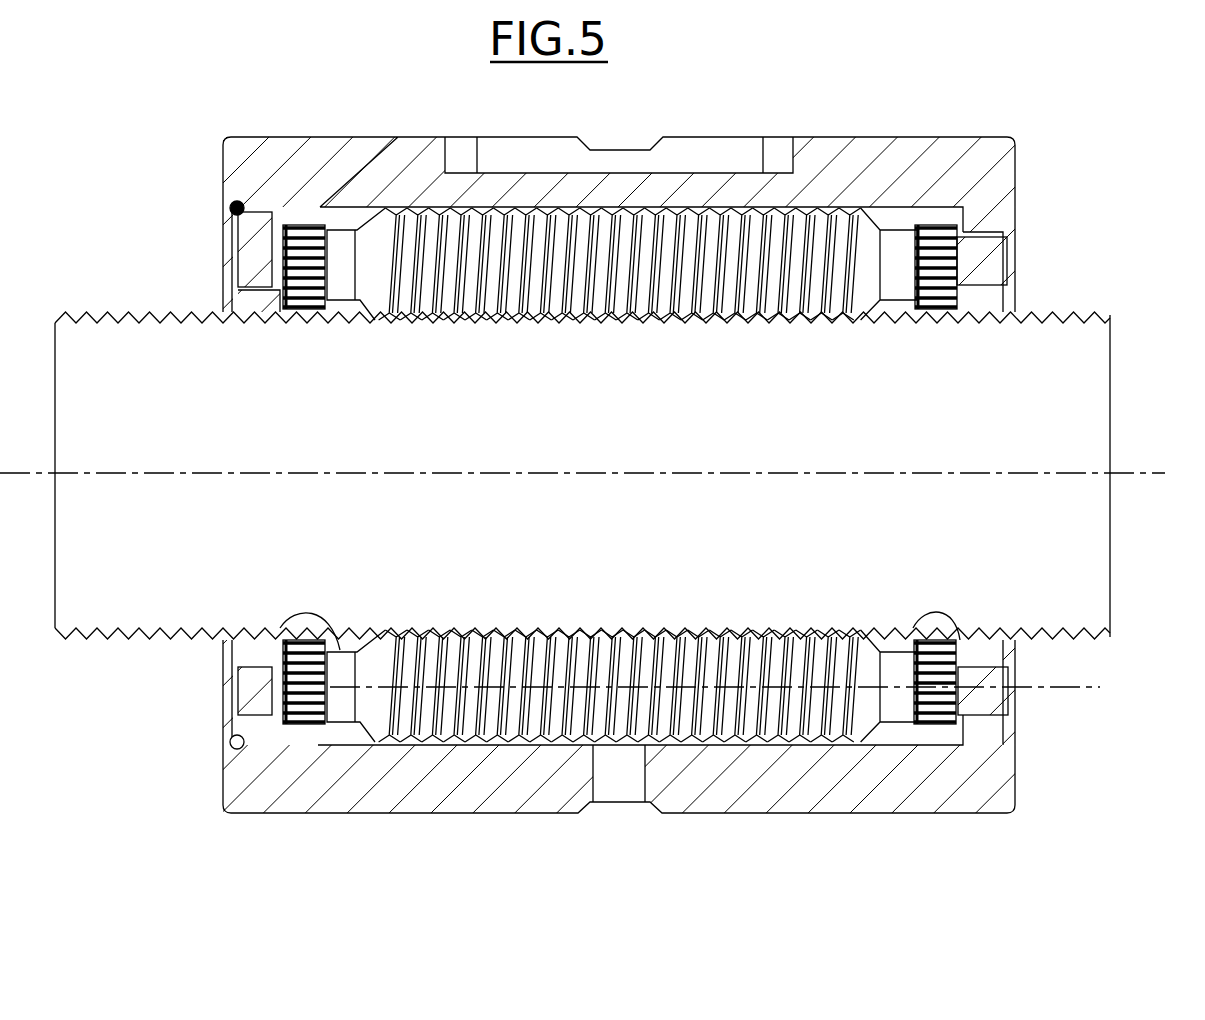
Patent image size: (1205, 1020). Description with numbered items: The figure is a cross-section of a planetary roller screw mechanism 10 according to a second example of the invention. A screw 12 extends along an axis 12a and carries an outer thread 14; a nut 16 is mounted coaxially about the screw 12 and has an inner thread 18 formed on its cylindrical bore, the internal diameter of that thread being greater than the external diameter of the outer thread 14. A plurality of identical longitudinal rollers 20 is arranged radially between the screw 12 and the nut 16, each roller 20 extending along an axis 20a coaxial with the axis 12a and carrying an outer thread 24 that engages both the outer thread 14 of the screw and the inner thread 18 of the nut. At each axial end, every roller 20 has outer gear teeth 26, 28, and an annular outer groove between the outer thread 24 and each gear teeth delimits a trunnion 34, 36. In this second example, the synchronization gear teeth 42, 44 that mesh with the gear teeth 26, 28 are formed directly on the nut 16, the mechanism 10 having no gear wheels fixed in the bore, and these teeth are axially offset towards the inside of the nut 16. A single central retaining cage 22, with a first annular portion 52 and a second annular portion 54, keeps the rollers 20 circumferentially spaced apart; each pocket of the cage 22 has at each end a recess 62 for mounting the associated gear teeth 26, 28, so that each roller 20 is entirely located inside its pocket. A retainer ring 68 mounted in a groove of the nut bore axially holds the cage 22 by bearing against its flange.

The planetary roller screw mechanism 10 is at (876, 97).
The screw 12 is at (142, 308).
The axis 12a is at (1152, 473).
The outer thread 14 is at (1082, 314).
The nut 16 is at (337, 133).
The inner thread 18 is at (800, 238).
The rollers 20 is at (652, 236).
The axis 20a is at (720, 712).
The central retaining cage 22 is at (240, 246).
The outer thread 24 is at (714, 745).
The outer gear teeth 26 is at (306, 728).
The outer gear teeth 28 is at (940, 732).
The trunnion 34 is at (280, 628).
The trunnion 36 is at (955, 630).
The synchronization gear teeth 42 is at (283, 222).
The synchronization gear teeth 44 is at (952, 230).
The first annular portion 52 is at (252, 690).
The second annular portion 54 is at (1005, 690).
The recess 62 is at (278, 232).
The retainer ring 68 is at (230, 745).